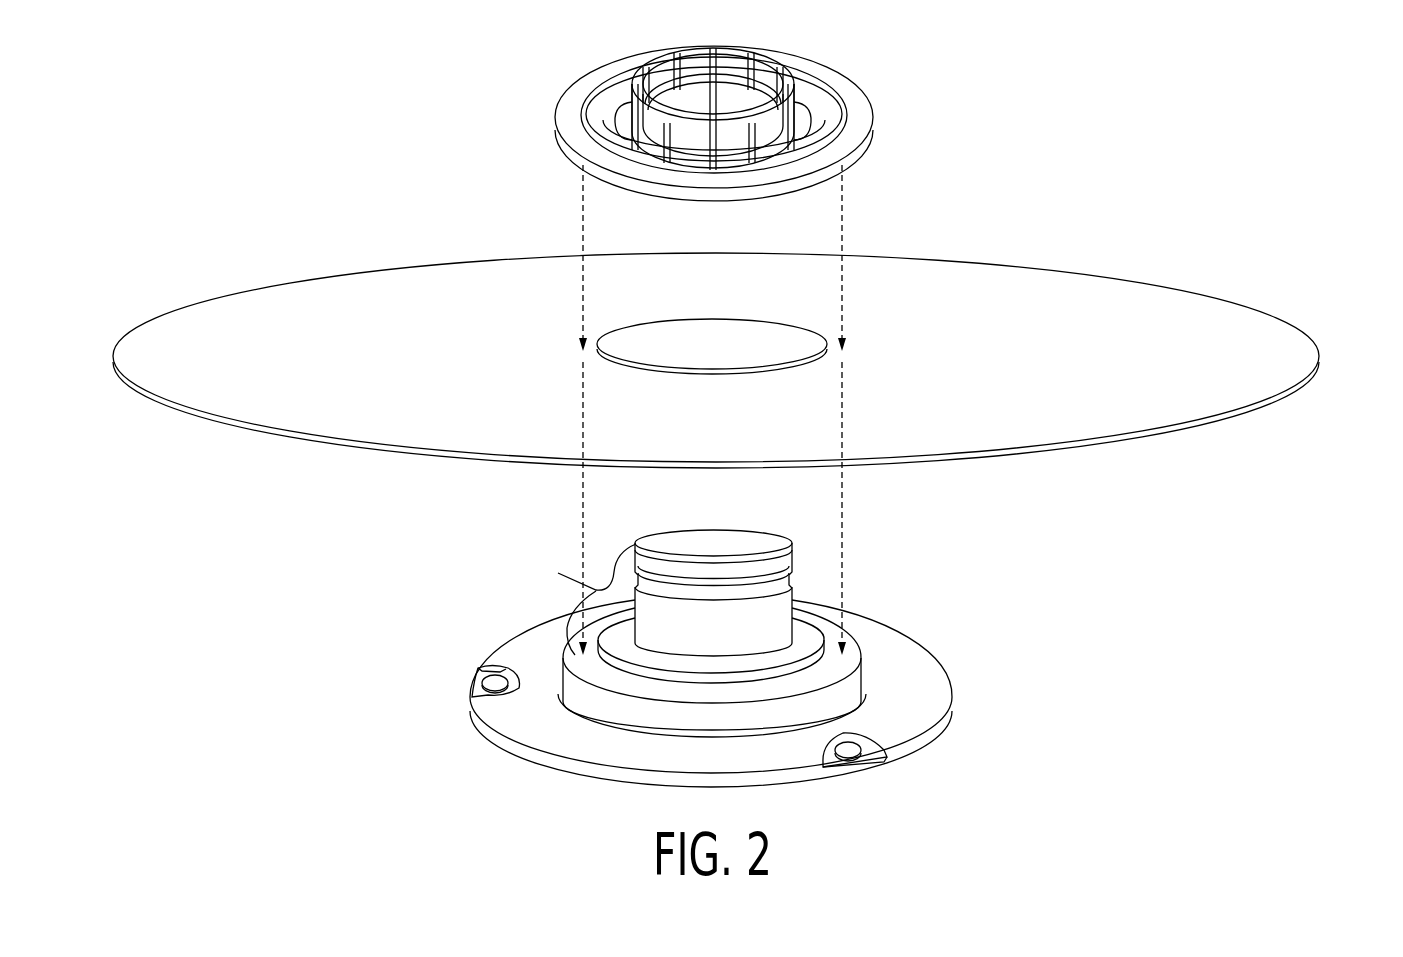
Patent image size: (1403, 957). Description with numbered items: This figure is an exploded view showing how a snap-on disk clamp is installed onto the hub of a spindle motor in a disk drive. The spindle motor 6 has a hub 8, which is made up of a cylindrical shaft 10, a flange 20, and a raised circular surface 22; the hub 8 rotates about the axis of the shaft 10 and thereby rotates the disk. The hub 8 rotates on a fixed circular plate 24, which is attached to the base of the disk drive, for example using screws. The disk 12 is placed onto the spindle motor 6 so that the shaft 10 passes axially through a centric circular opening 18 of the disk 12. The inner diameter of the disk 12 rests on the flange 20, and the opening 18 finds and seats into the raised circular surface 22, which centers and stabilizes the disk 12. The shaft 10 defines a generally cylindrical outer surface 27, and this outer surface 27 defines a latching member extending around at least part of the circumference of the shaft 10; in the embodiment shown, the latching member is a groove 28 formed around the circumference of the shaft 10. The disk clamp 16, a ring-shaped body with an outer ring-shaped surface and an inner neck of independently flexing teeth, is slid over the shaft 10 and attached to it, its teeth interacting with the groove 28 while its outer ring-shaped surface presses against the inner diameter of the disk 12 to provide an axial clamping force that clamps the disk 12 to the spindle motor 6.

The spindle motor 6 is at (784, 633).
The hub 8 is at (587, 599).
The cylindrical shaft 10 is at (805, 567).
The disk 12 is at (1322, 357).
The disk clamp 16 is at (873, 117).
The centric circular opening 18 is at (712, 346).
The flange 20 is at (722, 715).
The raised circular surface 22 is at (708, 678).
The fixed circular plate 24 is at (953, 697).
The outer surface 27 is at (790, 562).
The groove 28 is at (790, 578).